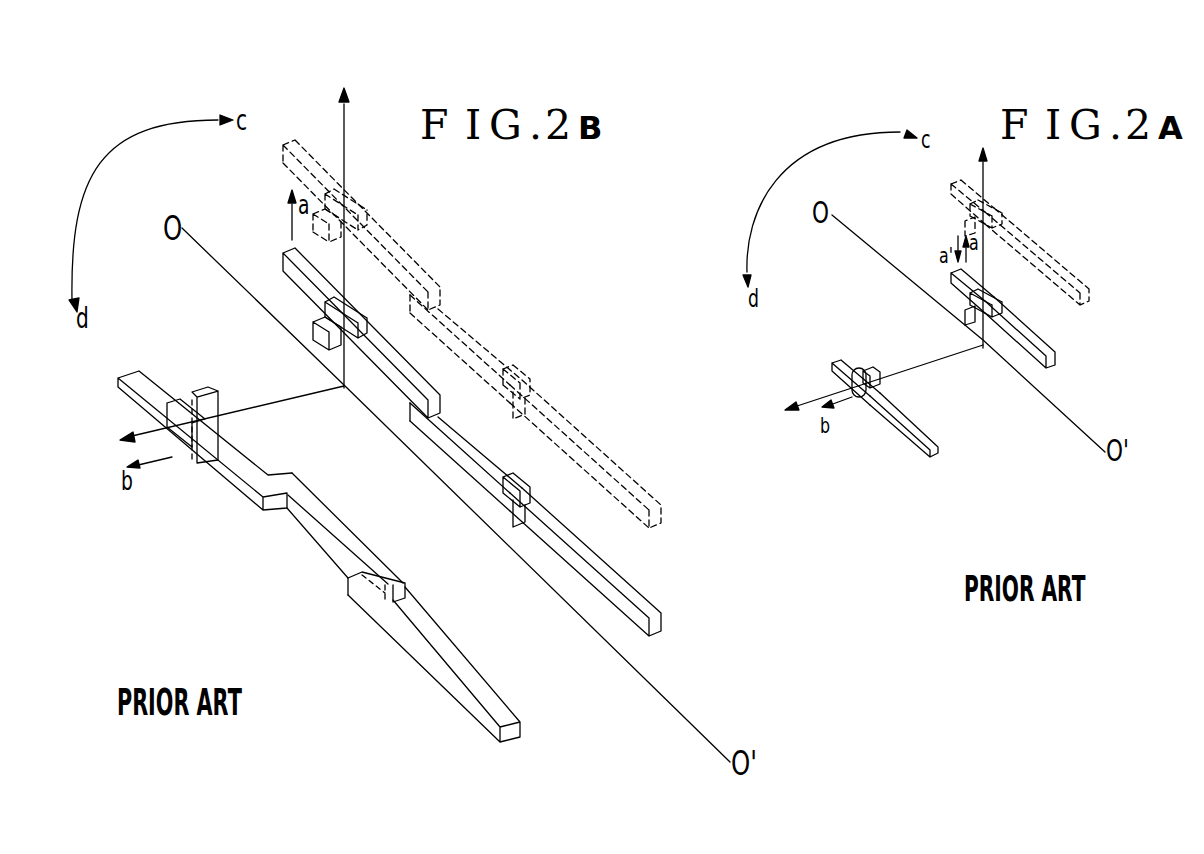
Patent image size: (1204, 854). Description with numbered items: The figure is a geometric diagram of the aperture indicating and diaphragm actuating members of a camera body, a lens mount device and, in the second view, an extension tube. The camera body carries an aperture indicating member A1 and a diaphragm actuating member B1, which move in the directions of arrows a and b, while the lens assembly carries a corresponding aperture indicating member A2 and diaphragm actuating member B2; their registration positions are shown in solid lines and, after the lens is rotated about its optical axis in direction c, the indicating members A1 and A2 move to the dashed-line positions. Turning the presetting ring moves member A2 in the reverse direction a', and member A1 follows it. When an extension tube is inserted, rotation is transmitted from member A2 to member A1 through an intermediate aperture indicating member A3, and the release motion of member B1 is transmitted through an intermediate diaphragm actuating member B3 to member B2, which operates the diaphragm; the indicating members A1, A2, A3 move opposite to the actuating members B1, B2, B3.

In FIG. 2B, the aperture indicating member A1 is at (288, 266).
In FIG. 2A, the aperture indicating member A1 is at (951, 281).
In FIG. 2B, the aperture indicating member A2 is at (590, 563).
In FIG. 2A, the aperture indicating member A2 is at (1053, 356).
In FIG. 2B, the intermediate aperture indicating member A3 is at (466, 450).
In FIG. 2B, the diaphragm actuating member B1 is at (135, 389).
In FIG. 2A, the diaphragm actuating member B1 is at (836, 372).
In FIG. 2B, the diaphragm actuating member B2 is at (465, 673).
In FIG. 2A, the diaphragm actuating member B2 is at (920, 431).
In FIG. 2B, the intermediate diaphragm actuating member B3 is at (330, 518).